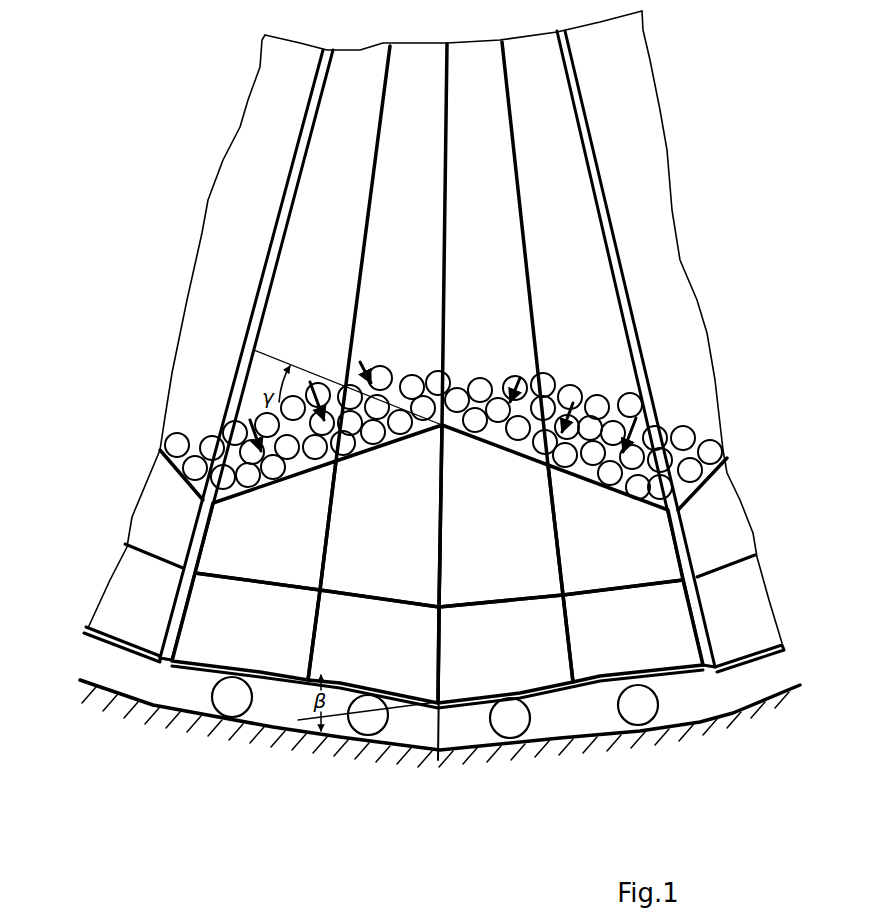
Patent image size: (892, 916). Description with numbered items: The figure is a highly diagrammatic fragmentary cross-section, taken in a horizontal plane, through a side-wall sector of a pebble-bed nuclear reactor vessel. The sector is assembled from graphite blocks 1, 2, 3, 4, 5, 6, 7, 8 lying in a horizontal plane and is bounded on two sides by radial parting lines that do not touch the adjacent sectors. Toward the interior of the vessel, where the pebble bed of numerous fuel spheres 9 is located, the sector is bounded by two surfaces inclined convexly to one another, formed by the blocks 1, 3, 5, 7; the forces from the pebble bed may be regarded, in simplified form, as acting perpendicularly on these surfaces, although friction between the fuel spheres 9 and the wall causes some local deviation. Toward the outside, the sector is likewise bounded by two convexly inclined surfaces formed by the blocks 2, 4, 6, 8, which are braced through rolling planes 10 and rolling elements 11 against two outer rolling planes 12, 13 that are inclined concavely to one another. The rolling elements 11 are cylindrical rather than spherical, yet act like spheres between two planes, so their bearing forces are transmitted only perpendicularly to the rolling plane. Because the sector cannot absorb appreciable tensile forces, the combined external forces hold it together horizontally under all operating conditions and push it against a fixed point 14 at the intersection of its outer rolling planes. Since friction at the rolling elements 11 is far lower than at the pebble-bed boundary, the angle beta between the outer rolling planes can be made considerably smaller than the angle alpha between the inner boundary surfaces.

The graphite block 1 is at (265, 525).
The graphite block 2 is at (246, 626).
The graphite block 3 is at (381, 516).
The graphite block 4 is at (373, 646).
The graphite block 5 is at (501, 516).
The graphite block 6 is at (505, 649).
The graphite block 7 is at (615, 530).
The graphite block 8 is at (633, 631).
The fuel spheres 9 is at (684, 437).
The rolling planes 10 is at (765, 650).
The rolling elements 11 is at (655, 717).
The rolling plane 12 is at (582, 737).
The rolling plane 13 is at (134, 724).
The fixed point 14 is at (438, 760).